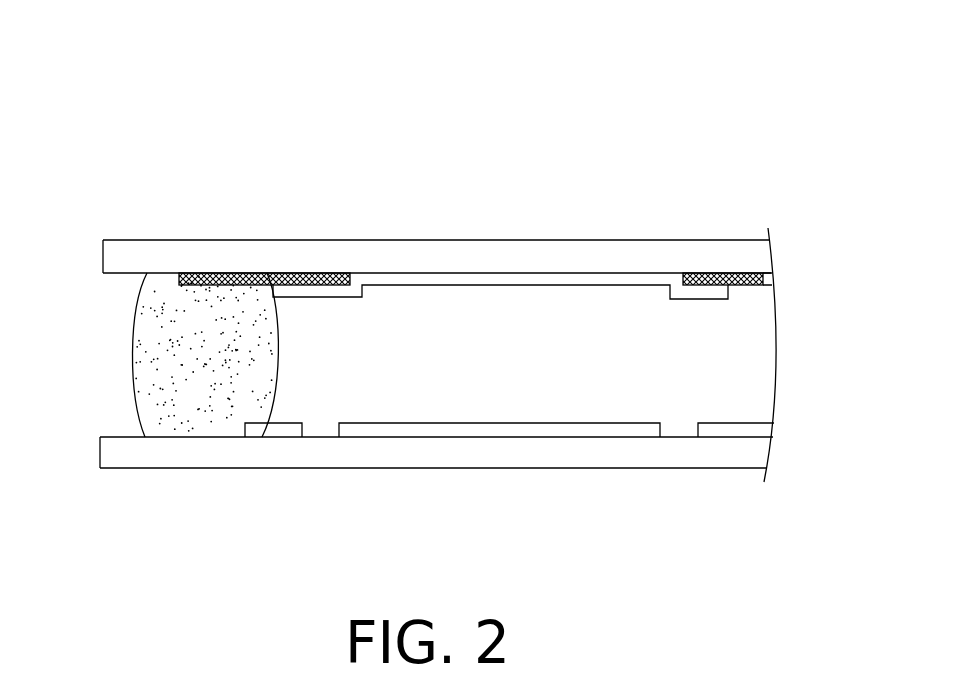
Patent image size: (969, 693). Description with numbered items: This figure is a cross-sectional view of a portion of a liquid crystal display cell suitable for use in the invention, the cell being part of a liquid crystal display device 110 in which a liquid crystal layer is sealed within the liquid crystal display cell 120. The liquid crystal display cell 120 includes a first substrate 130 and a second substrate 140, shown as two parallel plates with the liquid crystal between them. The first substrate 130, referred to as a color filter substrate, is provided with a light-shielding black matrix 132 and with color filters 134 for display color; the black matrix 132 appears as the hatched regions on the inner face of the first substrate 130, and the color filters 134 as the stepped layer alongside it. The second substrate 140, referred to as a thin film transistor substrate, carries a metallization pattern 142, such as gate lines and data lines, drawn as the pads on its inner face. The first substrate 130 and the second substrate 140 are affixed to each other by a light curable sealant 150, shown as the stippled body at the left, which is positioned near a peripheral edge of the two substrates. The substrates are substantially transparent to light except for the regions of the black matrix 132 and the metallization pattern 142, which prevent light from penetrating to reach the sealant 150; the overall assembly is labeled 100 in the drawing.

The display device 100 is at (115, 85).
The liquid crystal display device 110 is at (536, 372).
The liquid crystal display cell 120 is at (803, 243).
The first substrate 130 is at (87, 238).
The black matrix 132 is at (269, 287).
The color filters 134 is at (468, 278).
The second substrate 140 is at (87, 425).
The metallization pattern 142 is at (260, 428).
The light curable sealant 150 is at (157, 349).